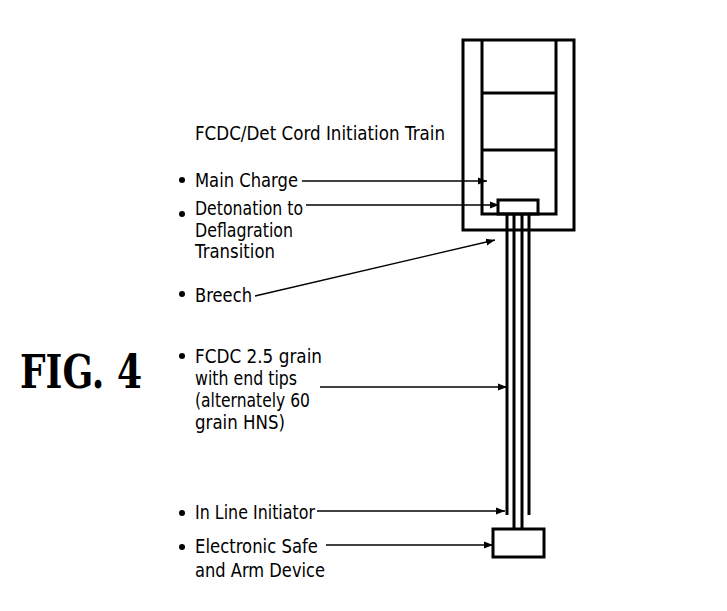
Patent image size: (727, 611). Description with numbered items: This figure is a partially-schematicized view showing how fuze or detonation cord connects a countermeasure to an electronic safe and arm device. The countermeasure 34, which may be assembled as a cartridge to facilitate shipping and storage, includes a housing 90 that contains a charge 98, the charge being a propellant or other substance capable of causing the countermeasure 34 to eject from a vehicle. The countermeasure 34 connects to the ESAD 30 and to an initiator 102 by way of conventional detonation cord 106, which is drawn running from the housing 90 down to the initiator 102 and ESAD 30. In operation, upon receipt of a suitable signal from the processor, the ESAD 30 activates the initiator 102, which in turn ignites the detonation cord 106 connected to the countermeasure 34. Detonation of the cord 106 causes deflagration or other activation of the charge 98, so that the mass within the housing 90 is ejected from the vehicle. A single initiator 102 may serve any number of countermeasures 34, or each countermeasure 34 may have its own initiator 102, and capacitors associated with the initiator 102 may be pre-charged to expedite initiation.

The countermeasure 34 is at (590, 37).
The housing 90 is at (574, 146).
The charge 98 is at (431, 184).
The detonation cord 106 is at (530, 395).
The initiator 102 is at (523, 522).
The ESAD 30 is at (394, 566).